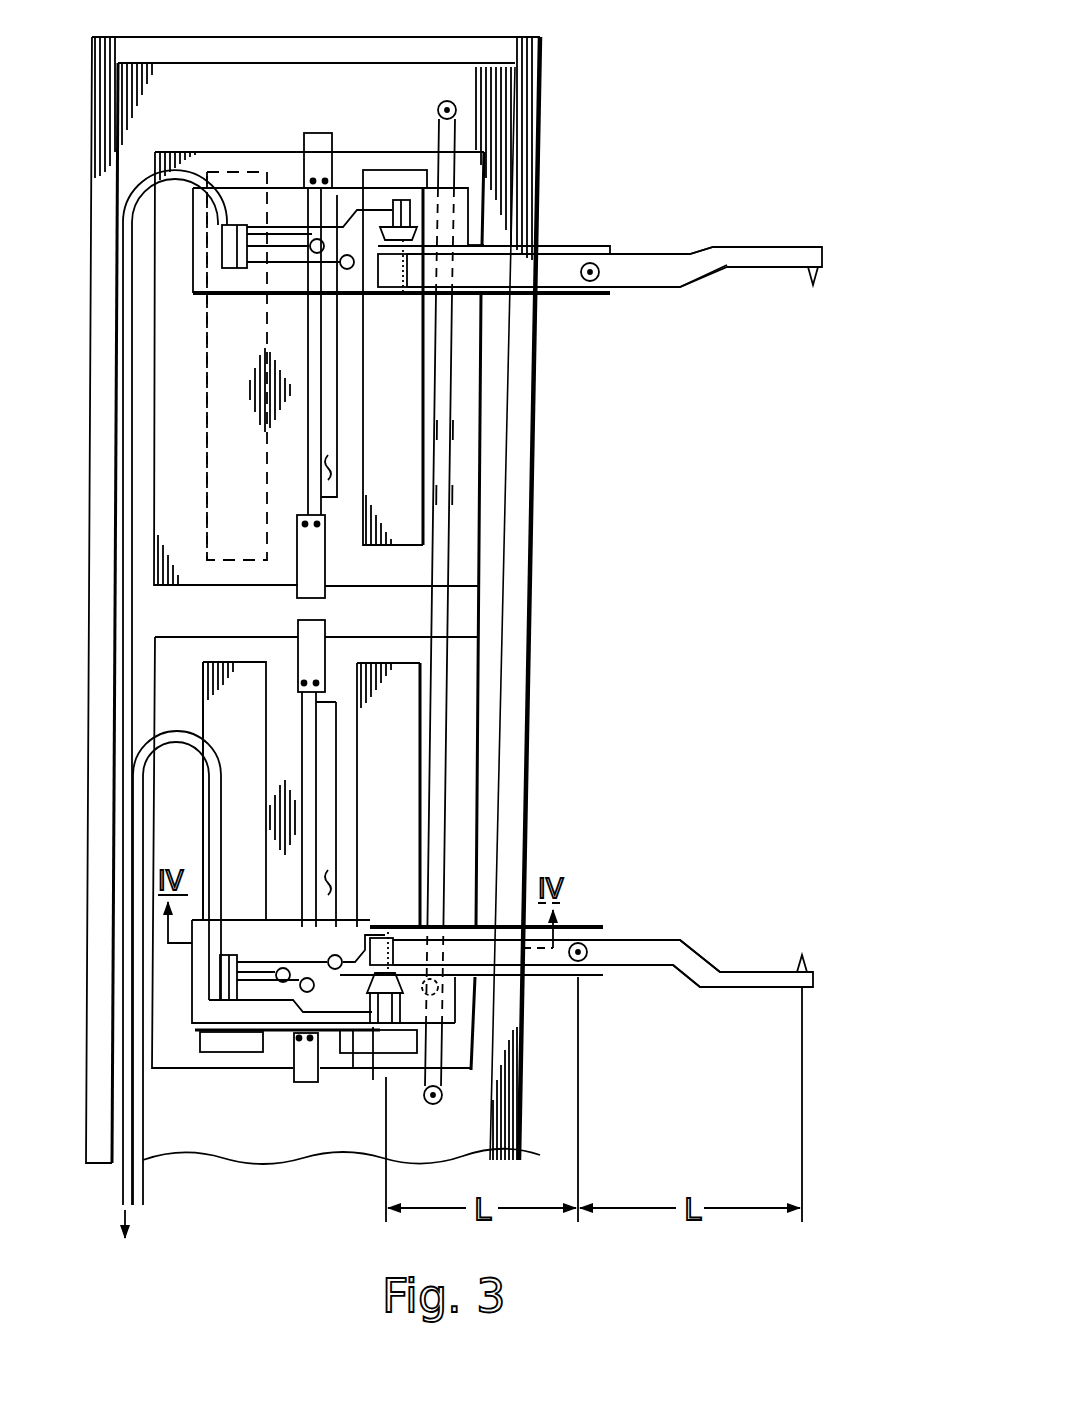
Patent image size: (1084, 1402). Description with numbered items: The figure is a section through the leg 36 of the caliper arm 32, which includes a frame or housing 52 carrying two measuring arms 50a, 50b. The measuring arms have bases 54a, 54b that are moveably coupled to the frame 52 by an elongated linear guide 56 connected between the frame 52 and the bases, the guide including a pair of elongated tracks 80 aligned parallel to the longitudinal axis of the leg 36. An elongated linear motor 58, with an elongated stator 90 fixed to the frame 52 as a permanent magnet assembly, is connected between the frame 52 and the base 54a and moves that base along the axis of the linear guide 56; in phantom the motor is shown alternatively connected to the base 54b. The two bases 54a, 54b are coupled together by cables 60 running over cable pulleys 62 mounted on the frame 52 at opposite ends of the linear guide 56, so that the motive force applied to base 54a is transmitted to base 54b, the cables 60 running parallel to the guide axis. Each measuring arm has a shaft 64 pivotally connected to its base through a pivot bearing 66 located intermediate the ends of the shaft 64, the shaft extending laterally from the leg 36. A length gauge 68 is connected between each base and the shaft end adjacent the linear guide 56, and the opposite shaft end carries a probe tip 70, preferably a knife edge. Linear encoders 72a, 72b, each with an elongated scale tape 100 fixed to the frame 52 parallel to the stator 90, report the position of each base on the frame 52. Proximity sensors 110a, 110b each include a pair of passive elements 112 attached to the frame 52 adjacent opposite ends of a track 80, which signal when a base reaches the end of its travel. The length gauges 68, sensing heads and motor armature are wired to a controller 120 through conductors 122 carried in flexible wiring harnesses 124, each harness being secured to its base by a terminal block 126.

The caliper arm 32 is at (486, 28).
The leg 36 is at (87, 688).
The measuring arm 50a is at (716, 945).
The measuring arm 50b is at (729, 238).
The frame 52 is at (483, 612).
The base 54a is at (412, 1022).
The base 54b is at (470, 213).
The linear guide 56 is at (446, 519).
The linear motor 58 is at (200, 527).
The cable 60 is at (437, 428).
The cable pulley 62 is at (441, 102).
The shaft 64 is at (715, 276).
The pivot bearing 66 is at (612, 276).
The length gauge 68 is at (402, 200).
The probe tip 70 is at (825, 272).
The linear encoder 72a is at (349, 748).
The linear encoder 72b is at (352, 368).
The track 80 is at (408, 437).
The stator 90 is at (205, 437).
The scale tape 100 is at (340, 470).
The proximity sensor 110a is at (291, 654).
The proximity sensor 110b is at (295, 161).
The passive element 112 is at (318, 132).
The controller 120 is at (269, 1230).
The conductor 122 is at (252, 213).
The wiring harness 124 is at (118, 318).
The terminal block 126 is at (235, 270).